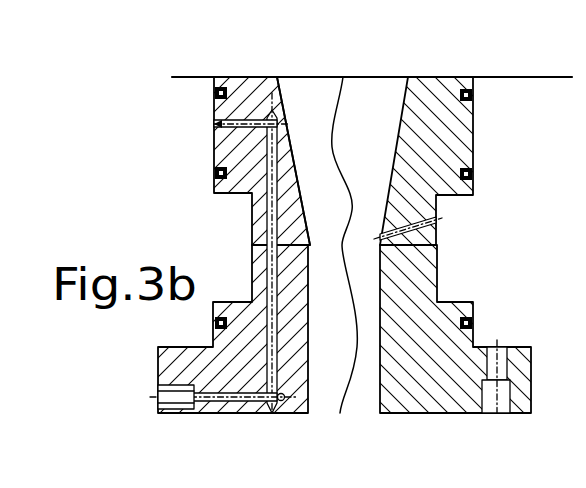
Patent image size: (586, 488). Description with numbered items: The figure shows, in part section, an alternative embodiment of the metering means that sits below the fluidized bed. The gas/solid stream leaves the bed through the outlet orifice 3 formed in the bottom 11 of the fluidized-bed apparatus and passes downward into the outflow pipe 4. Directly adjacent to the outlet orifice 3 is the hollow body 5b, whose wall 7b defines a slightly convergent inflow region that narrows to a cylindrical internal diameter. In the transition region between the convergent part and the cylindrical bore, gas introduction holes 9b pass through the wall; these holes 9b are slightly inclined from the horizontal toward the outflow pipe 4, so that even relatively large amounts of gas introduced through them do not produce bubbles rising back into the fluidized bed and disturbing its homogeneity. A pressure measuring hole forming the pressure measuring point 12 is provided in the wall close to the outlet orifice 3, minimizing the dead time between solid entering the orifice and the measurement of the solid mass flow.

The outlet orifice 3 is at (376, 75).
The outflow pipe 4 is at (267, 4).
The hollow body 5b is at (226, 237).
The wall of the hollow body 7b is at (310, 219).
The gas introduction holes 9b is at (444, 216).
The bottom of the fluidized-bed apparatus 11 is at (512, 75).
The pressure measuring point 12 is at (292, 118).